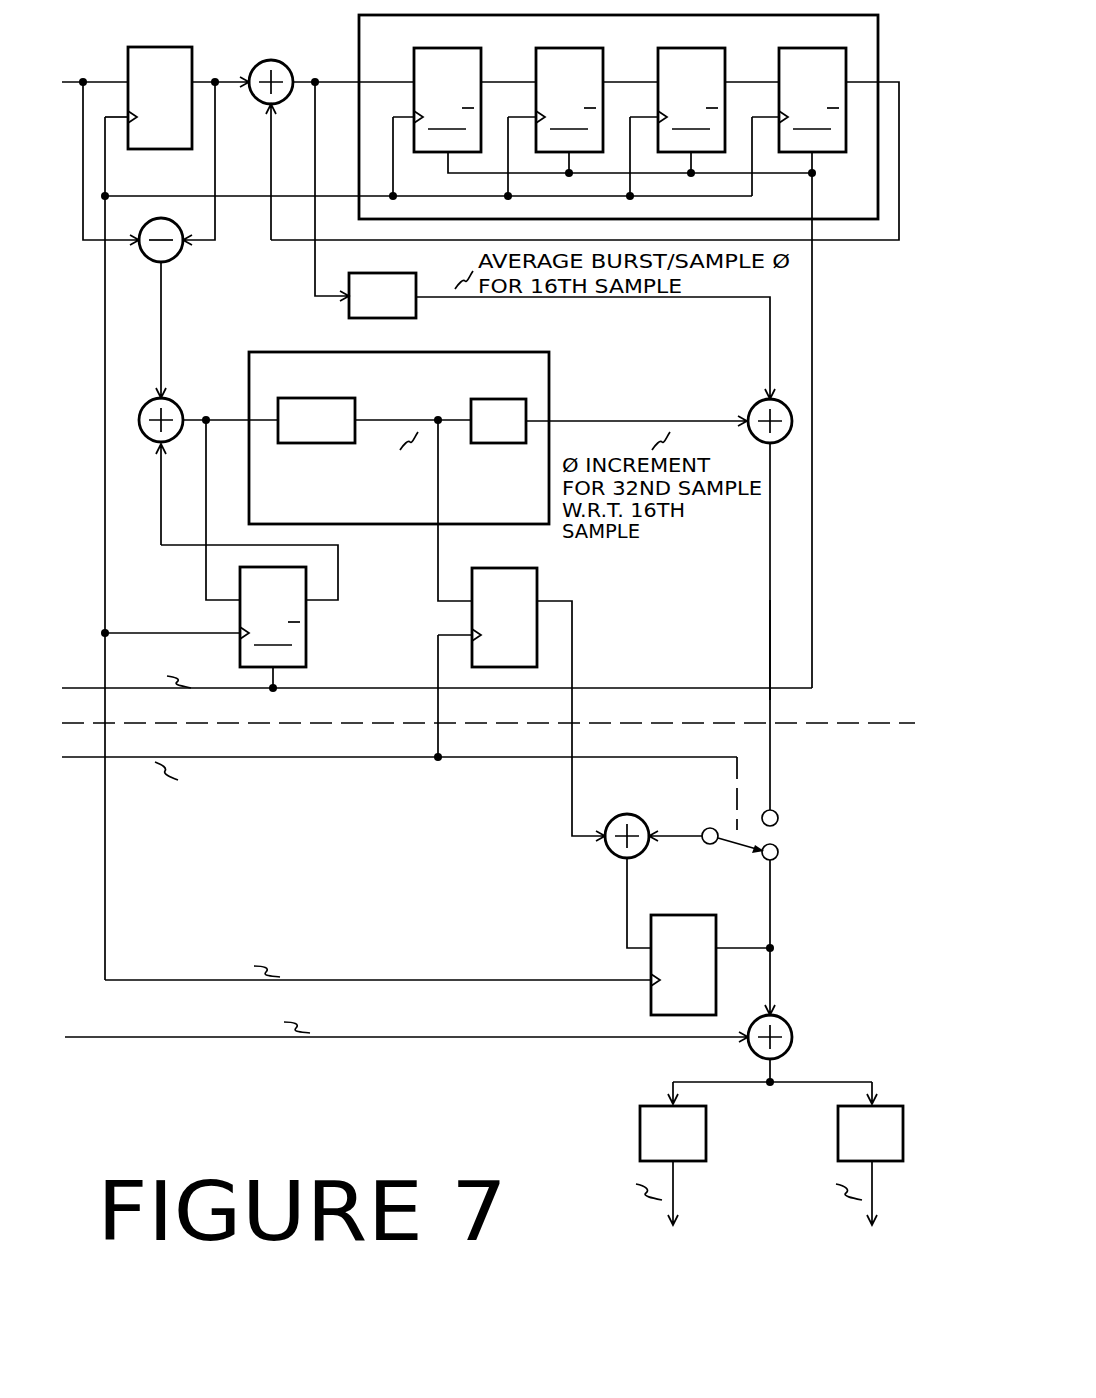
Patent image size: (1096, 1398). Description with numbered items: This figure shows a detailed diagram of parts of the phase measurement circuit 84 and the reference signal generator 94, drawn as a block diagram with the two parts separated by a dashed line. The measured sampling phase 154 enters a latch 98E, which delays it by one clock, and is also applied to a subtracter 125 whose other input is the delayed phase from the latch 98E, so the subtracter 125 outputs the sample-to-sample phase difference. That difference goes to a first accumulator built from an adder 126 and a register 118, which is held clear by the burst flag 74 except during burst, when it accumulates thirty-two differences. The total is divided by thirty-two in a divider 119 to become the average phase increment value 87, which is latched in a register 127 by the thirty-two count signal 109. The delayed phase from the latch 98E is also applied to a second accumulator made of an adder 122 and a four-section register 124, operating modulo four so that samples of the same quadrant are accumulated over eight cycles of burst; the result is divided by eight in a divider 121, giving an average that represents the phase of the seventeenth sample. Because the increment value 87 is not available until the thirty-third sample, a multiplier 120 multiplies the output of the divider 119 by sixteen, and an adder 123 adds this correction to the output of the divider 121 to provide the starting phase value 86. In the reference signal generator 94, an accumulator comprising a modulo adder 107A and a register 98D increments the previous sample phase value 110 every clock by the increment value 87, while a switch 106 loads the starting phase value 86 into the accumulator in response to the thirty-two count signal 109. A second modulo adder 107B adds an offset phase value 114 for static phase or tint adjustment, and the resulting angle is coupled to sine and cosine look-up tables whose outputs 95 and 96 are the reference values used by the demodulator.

The measured sampling phase α 154 is at (82, 76).
The latch 98E is at (175, 43).
The adder 122 is at (256, 60).
The register 124 is at (650, 40).
The subtracter 125 is at (178, 258).
The divider 121 is at (416, 315).
The adder 126 is at (168, 401).
The divider 119 is at (318, 390).
The multiplier 120 is at (492, 402).
The adder 123 is at (754, 401).
The register 127 is at (504, 548).
The register 118 is at (306, 622).
The burst flag 74 is at (93, 683).
The phase measurement circuit 84 is at (380, 716).
The reference signal generator 94 is at (380, 749).
The 32 count signal 109 is at (98, 766).
The φ increment value 87 is at (578, 650).
The φ starting phase value 86 is at (763, 614).
The adder 107A is at (620, 813).
The switch 106 is at (724, 827).
The previous sample phase value 110 is at (778, 960).
The register 98D is at (645, 1004).
The adder 107B is at (798, 1034).
The SIN output 95 is at (654, 1208).
The COS output 96 is at (854, 1208).
The offset phase value 114 is at (400, 1043).